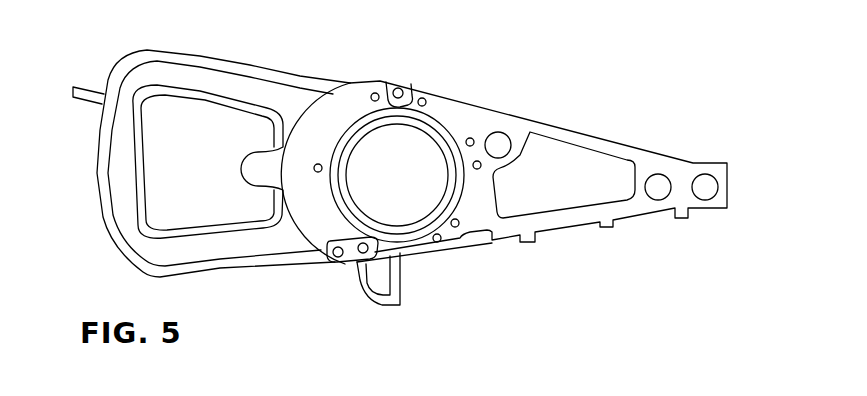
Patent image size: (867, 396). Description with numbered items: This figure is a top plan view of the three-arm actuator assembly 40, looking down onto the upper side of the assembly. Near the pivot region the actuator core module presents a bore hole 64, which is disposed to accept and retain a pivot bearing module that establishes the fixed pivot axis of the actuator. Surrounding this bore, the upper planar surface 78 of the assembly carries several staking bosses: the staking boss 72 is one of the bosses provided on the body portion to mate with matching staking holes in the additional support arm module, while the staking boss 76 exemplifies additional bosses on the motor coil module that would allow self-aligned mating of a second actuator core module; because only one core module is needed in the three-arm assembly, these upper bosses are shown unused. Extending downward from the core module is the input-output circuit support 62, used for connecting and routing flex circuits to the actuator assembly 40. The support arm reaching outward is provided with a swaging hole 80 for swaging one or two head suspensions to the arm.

The three-arm actuator assembly 40 is at (508, 80).
The input-output circuit support 62 is at (371, 306).
The bore hole 64 is at (410, 187).
The staking boss 72 is at (468, 137).
The staking boss 76 is at (375, 92).
The upper planar surface 78 is at (303, 201).
The swaging hole 80 is at (705, 174).